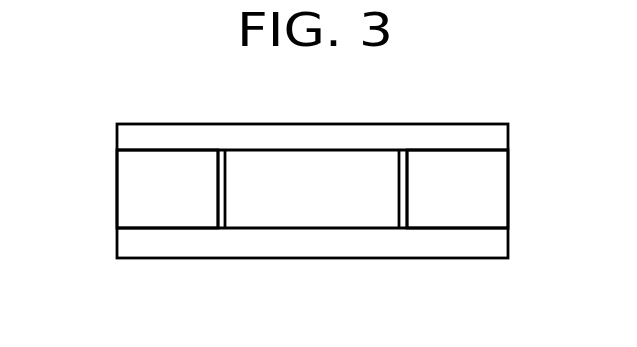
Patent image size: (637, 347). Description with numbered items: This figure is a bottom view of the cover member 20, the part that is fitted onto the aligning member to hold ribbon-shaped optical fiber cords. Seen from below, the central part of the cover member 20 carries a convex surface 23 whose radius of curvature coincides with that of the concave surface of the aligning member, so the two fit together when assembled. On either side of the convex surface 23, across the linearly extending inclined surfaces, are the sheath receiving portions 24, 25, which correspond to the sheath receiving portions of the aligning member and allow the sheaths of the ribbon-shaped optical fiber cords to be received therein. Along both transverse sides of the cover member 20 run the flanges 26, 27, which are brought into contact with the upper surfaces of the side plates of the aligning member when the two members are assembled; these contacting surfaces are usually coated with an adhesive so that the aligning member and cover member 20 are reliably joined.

The cover member 20 is at (574, 265).
The convex surface 23 is at (255, 212).
The sheath receiving portion 24 is at (129, 190).
The sheath receiving portion 25 is at (492, 207).
The flange 26 is at (487, 247).
The flange 27 is at (462, 132).